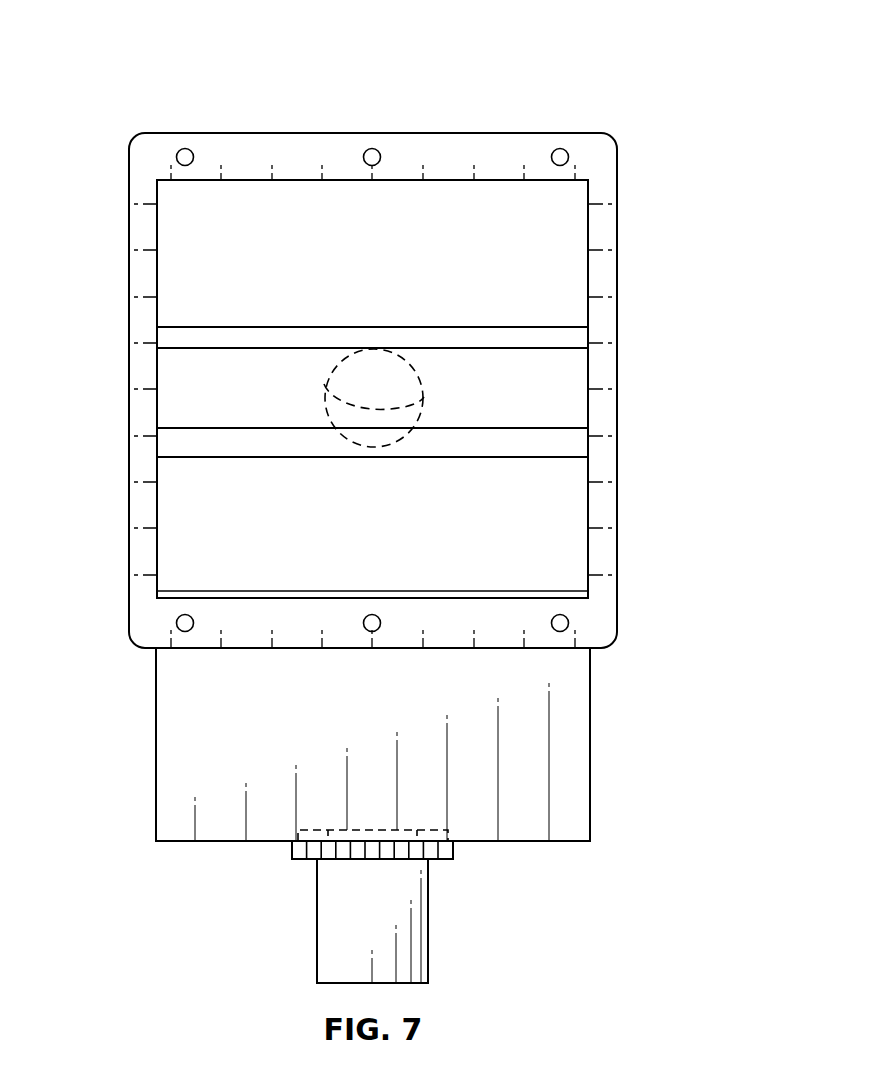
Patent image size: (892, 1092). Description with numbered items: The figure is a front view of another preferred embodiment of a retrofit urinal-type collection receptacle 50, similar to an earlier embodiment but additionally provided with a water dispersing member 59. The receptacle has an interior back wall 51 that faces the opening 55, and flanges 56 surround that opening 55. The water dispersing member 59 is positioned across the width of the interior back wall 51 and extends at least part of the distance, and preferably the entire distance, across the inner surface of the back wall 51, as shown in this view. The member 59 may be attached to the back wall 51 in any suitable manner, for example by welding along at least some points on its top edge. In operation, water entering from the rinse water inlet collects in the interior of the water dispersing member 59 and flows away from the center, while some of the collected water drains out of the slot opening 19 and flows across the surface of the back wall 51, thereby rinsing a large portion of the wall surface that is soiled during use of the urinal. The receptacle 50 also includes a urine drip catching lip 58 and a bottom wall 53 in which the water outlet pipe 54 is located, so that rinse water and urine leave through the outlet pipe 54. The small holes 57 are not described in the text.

The retrofit urinal-type collection receptacle 50 is at (579, 33).
The interior back wall 51 is at (590, 737).
The bottom wall 53 is at (171, 808).
The water outlet pipe 54 is at (413, 918).
The opening 55 is at (238, 252).
The flanges 56 is at (495, 156).
The mounting holes 57 is at (187, 148).
The urine drip catching lip 58 is at (553, 592).
The water dispersing member 59 is at (550, 388).
The slot opening 19 is at (436, 463).